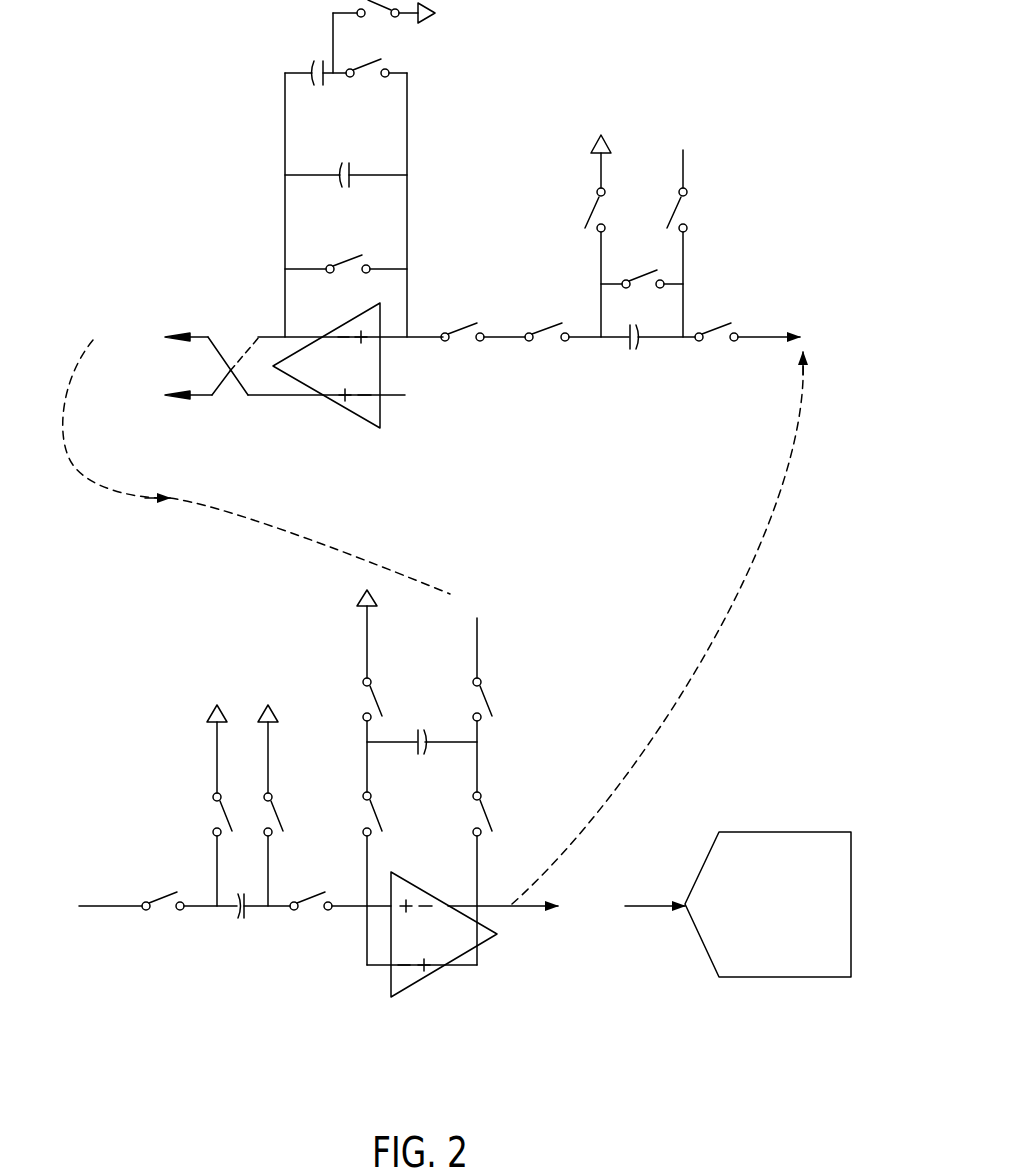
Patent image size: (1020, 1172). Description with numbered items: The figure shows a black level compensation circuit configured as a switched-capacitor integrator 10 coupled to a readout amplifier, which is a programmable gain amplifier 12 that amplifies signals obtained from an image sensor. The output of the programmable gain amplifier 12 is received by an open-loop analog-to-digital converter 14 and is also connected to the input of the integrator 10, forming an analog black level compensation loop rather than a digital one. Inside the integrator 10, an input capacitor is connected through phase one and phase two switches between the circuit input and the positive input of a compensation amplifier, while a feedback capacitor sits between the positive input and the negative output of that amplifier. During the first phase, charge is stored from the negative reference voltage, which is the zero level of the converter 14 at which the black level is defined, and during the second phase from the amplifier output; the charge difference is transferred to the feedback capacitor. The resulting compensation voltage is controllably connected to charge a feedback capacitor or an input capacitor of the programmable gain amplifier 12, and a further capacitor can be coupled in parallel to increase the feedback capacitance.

The black level compensation circuit 10 is at (646, 84).
The programmable gain amplifier 12 is at (96, 644).
The analog-to-digital converter 14 is at (783, 934).